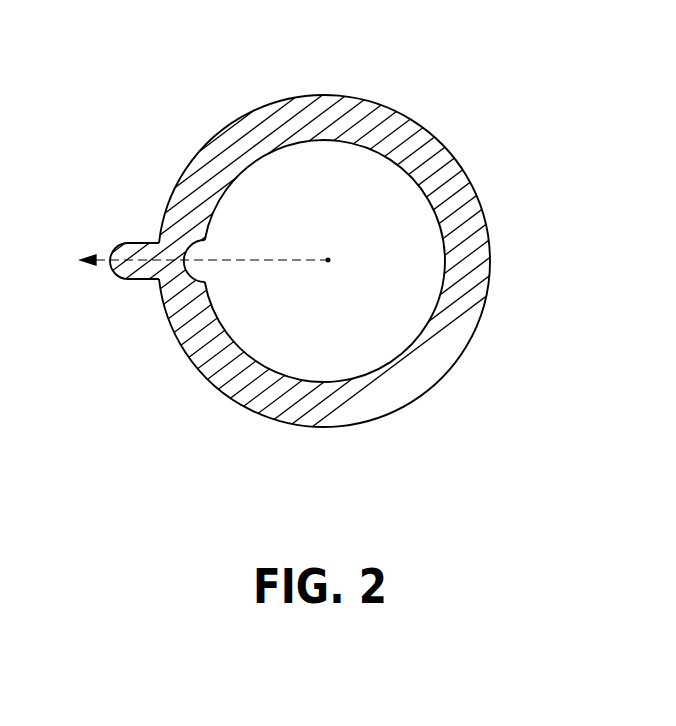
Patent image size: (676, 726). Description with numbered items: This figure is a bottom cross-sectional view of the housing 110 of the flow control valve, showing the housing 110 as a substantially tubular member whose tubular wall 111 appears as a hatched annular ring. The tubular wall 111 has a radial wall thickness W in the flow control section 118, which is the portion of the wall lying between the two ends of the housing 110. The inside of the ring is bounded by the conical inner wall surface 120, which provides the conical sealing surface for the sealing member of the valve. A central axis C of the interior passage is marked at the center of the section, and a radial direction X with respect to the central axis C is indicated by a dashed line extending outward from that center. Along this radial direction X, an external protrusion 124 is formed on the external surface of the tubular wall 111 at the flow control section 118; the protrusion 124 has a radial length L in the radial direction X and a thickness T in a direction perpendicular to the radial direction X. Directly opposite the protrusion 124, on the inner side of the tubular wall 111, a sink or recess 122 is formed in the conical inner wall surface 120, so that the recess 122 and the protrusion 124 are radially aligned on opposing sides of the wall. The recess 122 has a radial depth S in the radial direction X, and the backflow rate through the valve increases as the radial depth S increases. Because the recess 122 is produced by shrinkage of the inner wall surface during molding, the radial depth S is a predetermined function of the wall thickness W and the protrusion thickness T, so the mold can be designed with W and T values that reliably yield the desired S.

The housing 110 is at (338, 234).
The tubular wall 111 is at (473, 250).
The flow control section 118 is at (466, 164).
The conical inner wall surface 120 is at (218, 347).
The recess 122 is at (188, 258).
The external protrusion 124 is at (140, 280).
The radial direction X is at (307, 240).
The central axis C is at (338, 278).
The radial wall thickness W is at (286, 94).
The radial length L is at (158, 96).
The protrusion thickness T is at (65, 243).
The radial depth S is at (183, 262).